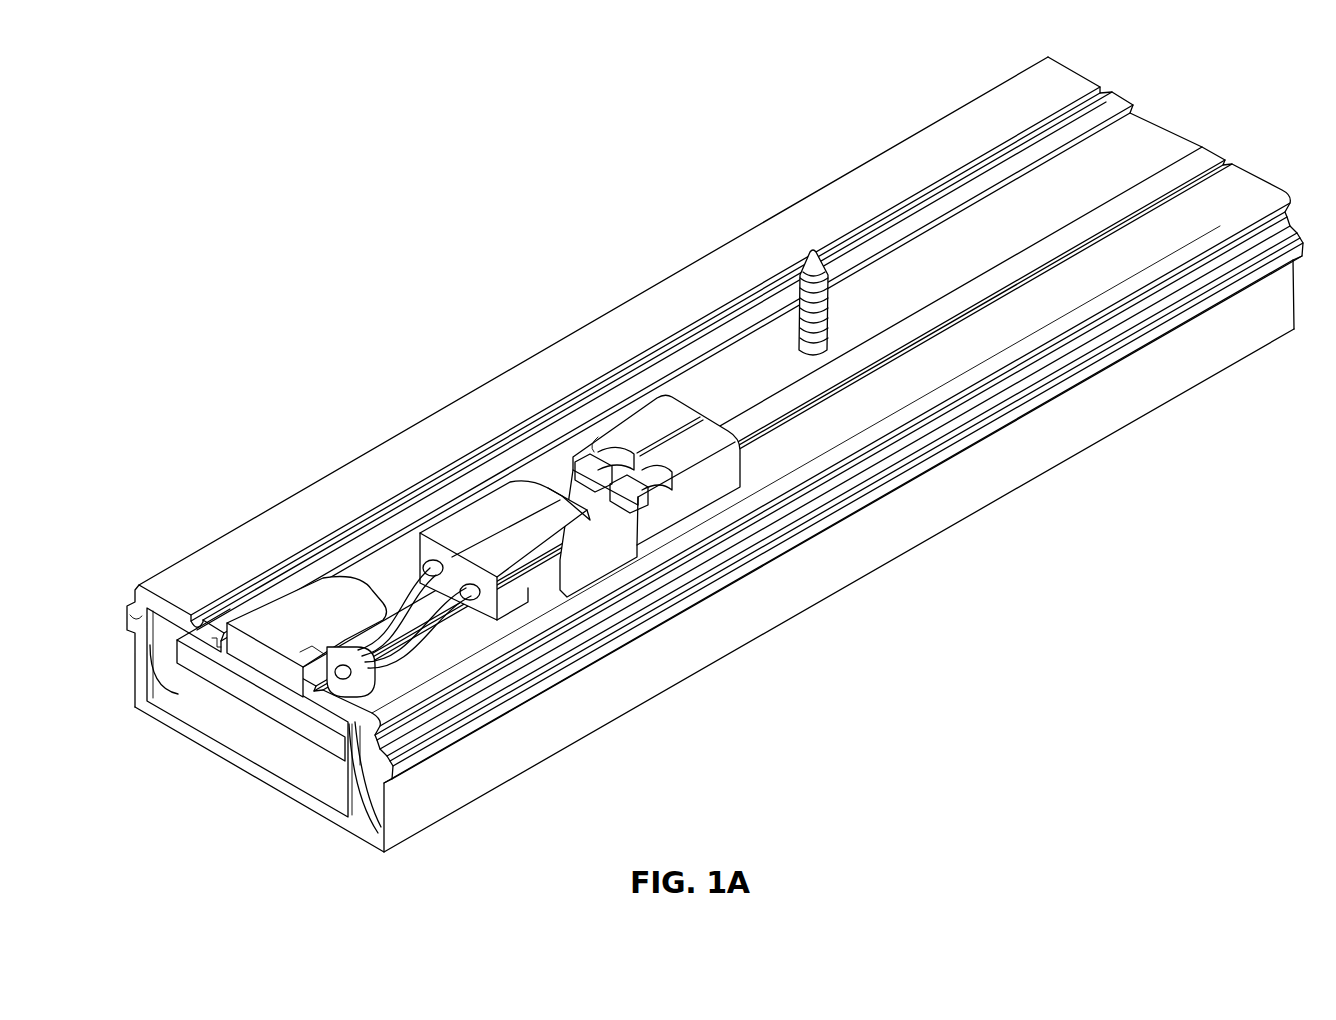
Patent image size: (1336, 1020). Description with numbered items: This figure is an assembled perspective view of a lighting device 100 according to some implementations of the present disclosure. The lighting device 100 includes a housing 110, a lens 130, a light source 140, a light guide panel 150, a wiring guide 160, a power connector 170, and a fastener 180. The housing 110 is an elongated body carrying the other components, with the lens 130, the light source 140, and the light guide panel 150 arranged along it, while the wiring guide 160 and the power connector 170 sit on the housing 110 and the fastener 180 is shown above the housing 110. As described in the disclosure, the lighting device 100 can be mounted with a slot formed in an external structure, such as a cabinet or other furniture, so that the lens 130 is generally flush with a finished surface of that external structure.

The lighting device 100 is at (237, 153).
The housing 110 is at (905, 165).
The lens 130 is at (240, 775).
The light source 140 is at (347, 766).
The light guide panel 150 is at (210, 675).
The wiring guide 160 is at (313, 622).
The power connector 170 is at (641, 432).
The fastener 180 is at (810, 258).